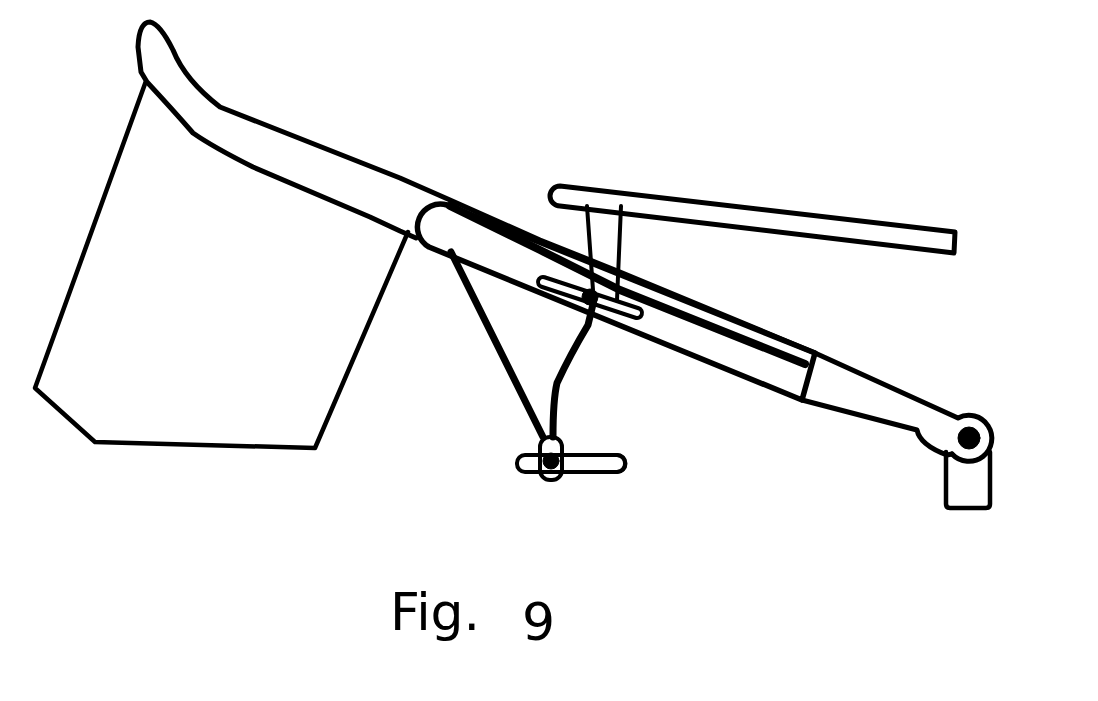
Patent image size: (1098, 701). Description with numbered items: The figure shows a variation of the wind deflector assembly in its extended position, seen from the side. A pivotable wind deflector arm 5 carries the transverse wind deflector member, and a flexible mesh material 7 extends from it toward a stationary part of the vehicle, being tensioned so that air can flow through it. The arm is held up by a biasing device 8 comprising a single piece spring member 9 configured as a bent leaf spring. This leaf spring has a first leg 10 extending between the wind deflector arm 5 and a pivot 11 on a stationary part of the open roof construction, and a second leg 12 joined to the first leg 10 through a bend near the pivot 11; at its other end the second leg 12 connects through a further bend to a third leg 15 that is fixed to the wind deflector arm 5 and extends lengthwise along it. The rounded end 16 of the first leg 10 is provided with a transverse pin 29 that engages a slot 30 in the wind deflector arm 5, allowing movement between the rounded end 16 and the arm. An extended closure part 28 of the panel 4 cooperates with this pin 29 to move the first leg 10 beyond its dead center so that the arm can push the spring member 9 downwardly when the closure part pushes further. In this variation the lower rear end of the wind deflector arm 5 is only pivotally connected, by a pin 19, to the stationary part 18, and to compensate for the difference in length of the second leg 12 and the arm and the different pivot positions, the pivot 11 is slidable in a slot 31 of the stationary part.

The panel 4 is at (857, 230).
The wind deflector arm 5 is at (287, 163).
The mesh material 7 is at (167, 415).
The biasing device 8 is at (630, 506).
The spring member 9 is at (529, 400).
The first leg 10 is at (567, 370).
The pivot 11 is at (537, 480).
The second leg 12 is at (507, 375).
The third leg 15 is at (450, 202).
The rounded end 16 is at (578, 260).
The stationary part 18 is at (975, 490).
The pin 19 is at (990, 448).
The extended closure part 28 is at (624, 238).
The transverse pin 29 is at (600, 268).
The slot 30 is at (547, 255).
The slot 31 is at (620, 463).